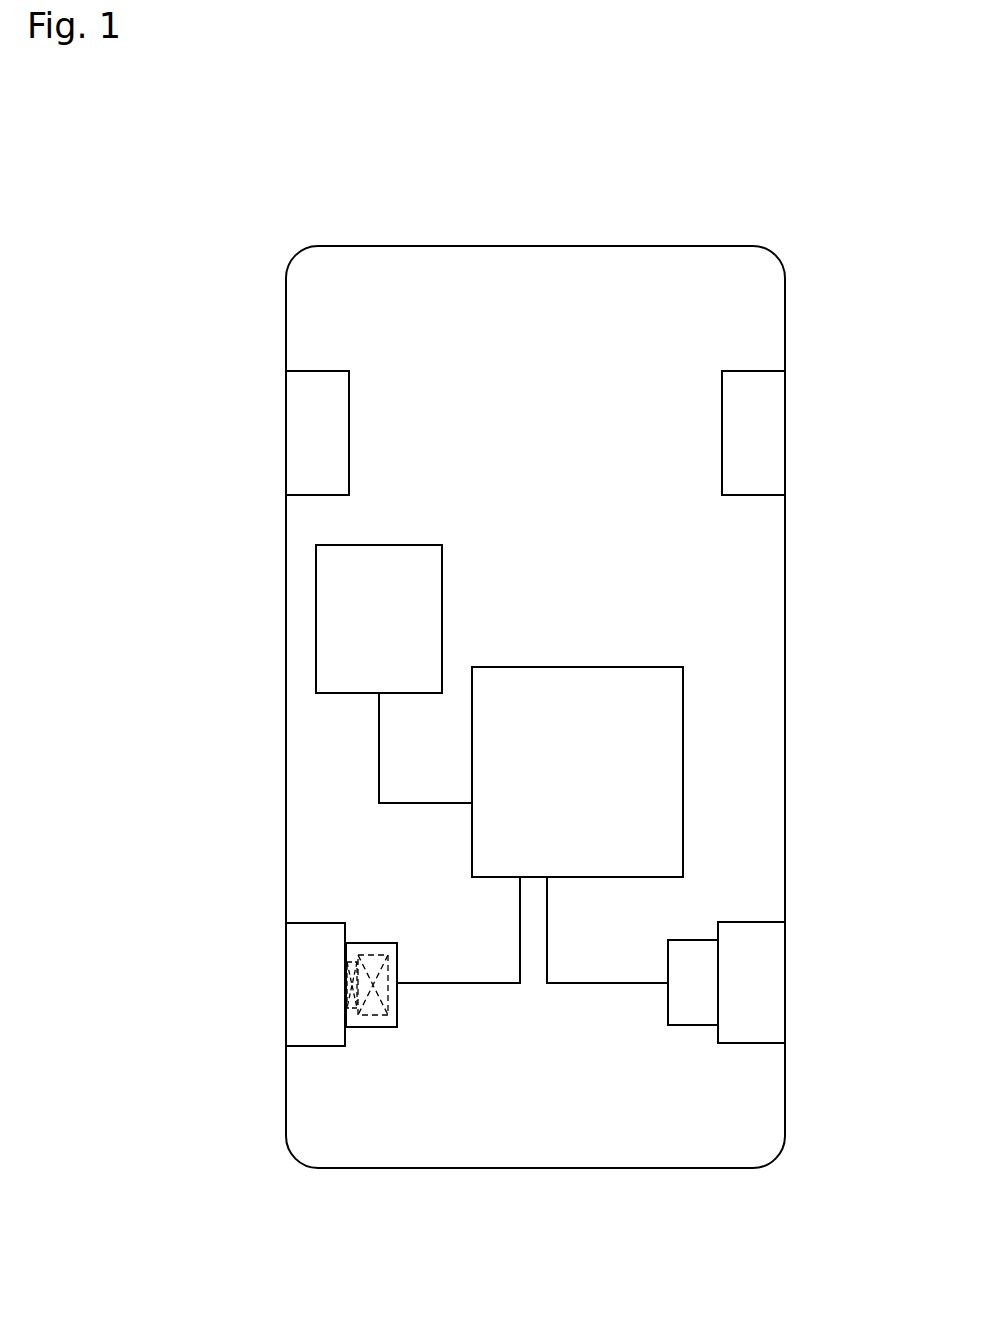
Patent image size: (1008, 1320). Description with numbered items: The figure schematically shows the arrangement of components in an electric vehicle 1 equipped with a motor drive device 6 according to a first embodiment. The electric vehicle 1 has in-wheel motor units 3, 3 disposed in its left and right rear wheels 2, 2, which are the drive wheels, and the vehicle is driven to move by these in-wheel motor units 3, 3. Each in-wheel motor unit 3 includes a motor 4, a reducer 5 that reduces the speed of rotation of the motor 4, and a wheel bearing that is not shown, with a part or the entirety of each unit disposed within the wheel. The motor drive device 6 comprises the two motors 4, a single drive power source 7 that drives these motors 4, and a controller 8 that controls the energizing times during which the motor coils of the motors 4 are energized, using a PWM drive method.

The electric vehicle 1 is at (252, 303).
The rear wheel 2 is at (303, 981).
The in-wheel motor unit 3 is at (352, 972).
The motor 4 is at (372, 1017).
The reducer 5 is at (347, 1010).
The motor drive device 6 is at (420, 865).
The drive power source 7 is at (325, 622).
The controller 8 is at (502, 693).